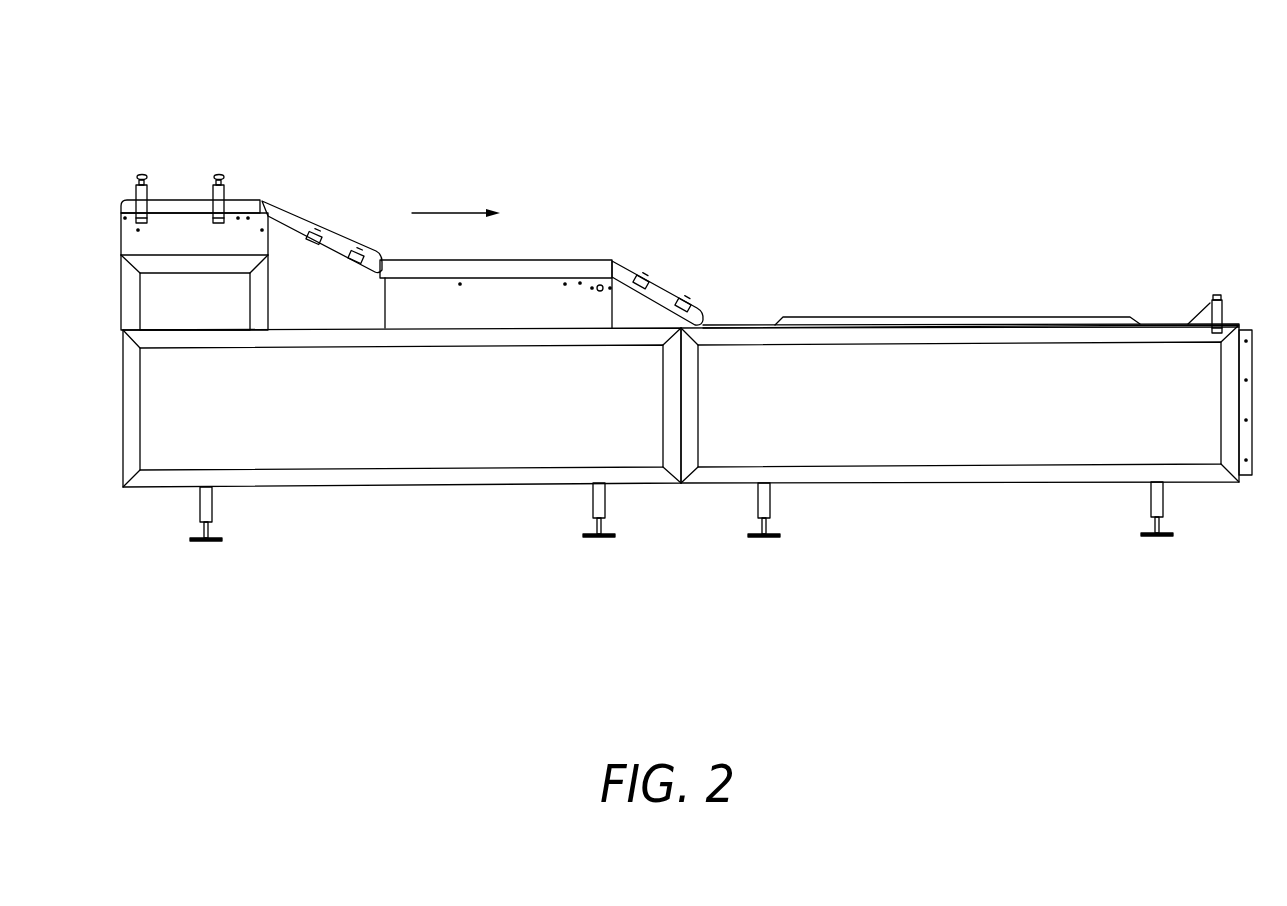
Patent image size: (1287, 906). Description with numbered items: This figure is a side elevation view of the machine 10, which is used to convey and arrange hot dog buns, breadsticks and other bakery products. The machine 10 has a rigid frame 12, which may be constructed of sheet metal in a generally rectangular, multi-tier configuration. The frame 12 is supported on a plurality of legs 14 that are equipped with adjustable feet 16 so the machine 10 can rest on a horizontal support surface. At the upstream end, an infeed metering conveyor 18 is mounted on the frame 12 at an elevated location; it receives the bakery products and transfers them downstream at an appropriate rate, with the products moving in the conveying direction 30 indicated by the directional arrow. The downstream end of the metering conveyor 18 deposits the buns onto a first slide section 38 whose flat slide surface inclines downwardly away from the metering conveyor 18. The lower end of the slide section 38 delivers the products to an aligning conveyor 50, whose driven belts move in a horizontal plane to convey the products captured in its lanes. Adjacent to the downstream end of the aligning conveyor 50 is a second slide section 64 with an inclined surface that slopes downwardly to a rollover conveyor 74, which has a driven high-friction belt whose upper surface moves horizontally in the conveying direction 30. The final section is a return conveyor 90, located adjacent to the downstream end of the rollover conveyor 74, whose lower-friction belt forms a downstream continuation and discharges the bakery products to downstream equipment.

The machine 10 is at (801, 105).
The frame 12 is at (414, 445).
The legs 14 is at (200, 510).
The adjustable feet 16 is at (205, 545).
The infeed metering conveyor 18 is at (189, 145).
The conveying direction 30 is at (450, 213).
The first slide section 38 is at (333, 194).
The aligning conveyor 50 is at (533, 214).
The second slide section 64 is at (681, 250).
The rollover conveyor 74 is at (869, 277).
The return conveyor 90 is at (1175, 272).